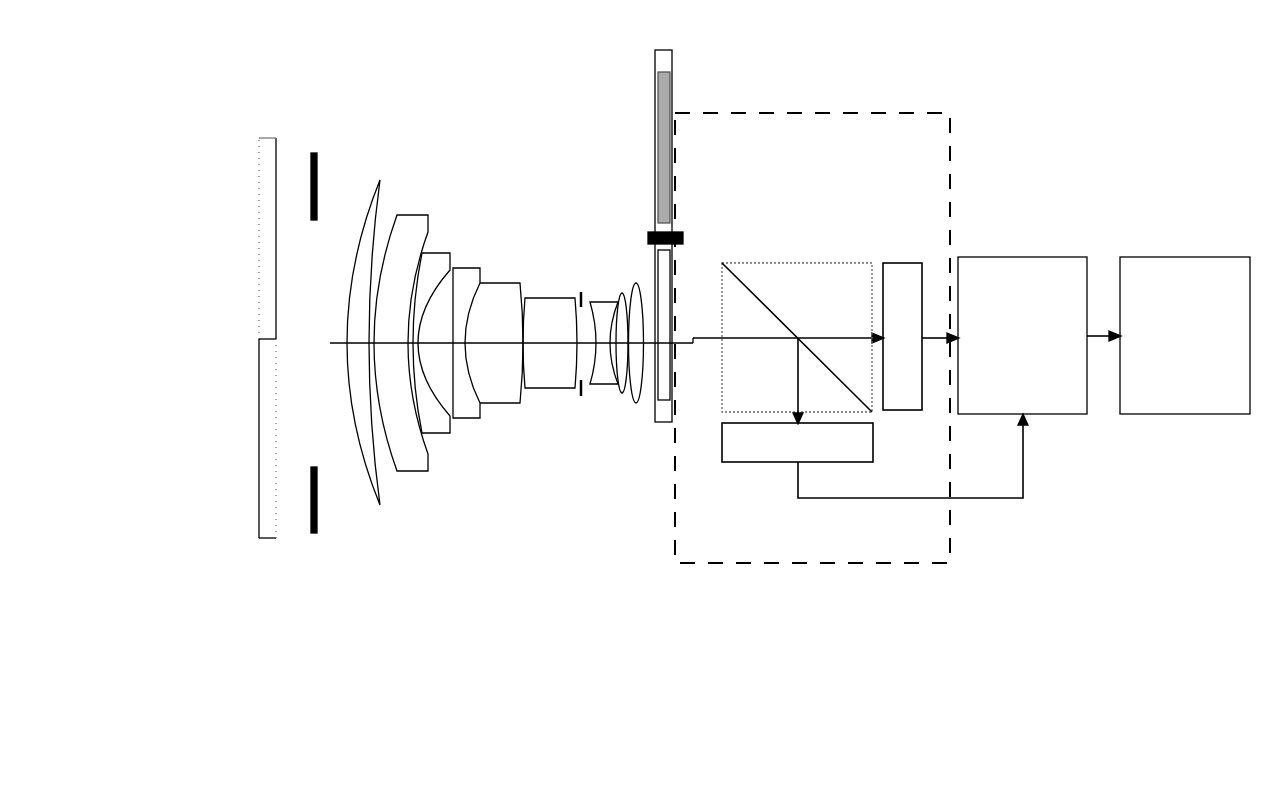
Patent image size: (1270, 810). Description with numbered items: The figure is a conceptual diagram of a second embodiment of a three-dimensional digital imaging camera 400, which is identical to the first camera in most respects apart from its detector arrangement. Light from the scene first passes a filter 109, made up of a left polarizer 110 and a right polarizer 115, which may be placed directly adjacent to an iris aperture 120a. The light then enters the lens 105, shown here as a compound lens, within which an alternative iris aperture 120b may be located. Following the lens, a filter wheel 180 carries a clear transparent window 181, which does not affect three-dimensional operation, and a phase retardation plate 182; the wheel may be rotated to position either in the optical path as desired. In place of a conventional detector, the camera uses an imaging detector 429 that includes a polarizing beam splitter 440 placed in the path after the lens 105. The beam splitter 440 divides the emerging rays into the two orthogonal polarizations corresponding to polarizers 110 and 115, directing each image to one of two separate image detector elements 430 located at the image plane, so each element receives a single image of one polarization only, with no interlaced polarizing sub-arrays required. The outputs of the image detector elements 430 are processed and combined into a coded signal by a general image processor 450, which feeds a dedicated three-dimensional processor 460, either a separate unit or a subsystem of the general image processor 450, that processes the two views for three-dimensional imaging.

The 3-D digital imaging camera 400 is at (595, 106).
The lens 105 is at (653, 498).
The filter 109 is at (243, 378).
The left polarizer 110 is at (260, 487).
The right polarizer 115 is at (260, 202).
The iris aperture 120a is at (316, 177).
The iris aperture 120b is at (579, 290).
The filter wheel 180 is at (673, 62).
The transparent window 181 is at (660, 373).
The phase retardation plate 182 is at (662, 127).
The imaging detector 429 is at (955, 567).
The image detector elements 430 is at (873, 441).
The polarizing beam splitter 440 is at (793, 263).
The general image processor 450 is at (999, 405).
The 3-D processor 460 is at (1186, 405).